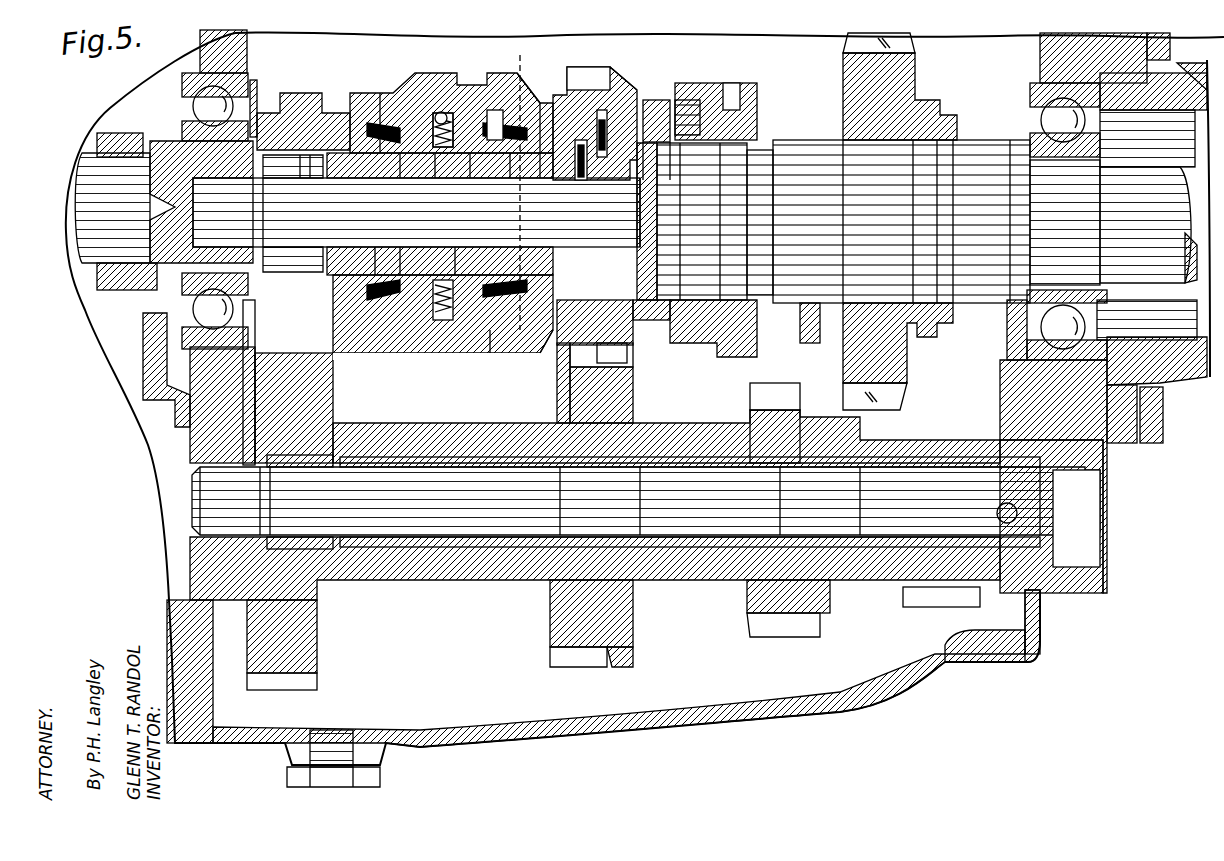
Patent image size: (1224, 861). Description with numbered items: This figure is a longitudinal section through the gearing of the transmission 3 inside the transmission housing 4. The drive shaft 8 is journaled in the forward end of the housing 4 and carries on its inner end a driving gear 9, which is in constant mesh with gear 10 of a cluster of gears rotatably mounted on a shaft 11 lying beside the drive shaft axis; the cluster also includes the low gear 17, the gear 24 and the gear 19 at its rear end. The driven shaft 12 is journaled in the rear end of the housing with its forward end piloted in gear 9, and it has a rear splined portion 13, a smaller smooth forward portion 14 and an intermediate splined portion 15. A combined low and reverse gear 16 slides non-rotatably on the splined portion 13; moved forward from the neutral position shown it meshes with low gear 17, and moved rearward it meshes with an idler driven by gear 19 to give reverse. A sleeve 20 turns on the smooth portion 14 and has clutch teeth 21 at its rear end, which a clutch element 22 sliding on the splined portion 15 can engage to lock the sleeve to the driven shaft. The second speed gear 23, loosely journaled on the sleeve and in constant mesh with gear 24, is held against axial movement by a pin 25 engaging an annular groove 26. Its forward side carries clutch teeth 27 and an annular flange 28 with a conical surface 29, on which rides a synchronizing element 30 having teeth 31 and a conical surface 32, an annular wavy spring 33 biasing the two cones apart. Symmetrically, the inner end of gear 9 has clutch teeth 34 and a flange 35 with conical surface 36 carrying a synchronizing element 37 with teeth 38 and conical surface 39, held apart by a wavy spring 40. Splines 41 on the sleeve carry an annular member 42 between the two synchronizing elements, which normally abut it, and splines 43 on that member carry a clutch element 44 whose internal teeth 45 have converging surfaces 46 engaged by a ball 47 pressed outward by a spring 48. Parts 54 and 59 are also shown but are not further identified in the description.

The transmission casing 3 is at (702, 673).
The transmission housing 4 is at (826, 716).
The drive shaft 8 is at (78, 262).
The driving gear 9 is at (292, 108).
The gear 10 is at (312, 628).
The shaft 11 is at (438, 578).
The driven shaft 12 is at (1158, 268).
The rear splined portion 13 is at (814, 150).
The smooth portion 14 is at (285, 210).
The intermediate splined portion 15 is at (750, 312).
The combined low and reverse gear 16 is at (900, 78).
The low gear 17 is at (752, 607).
The gear 19 is at (958, 593).
The sleeve 20 is at (512, 130).
The clutch teeth 21 is at (662, 100).
The clutch element 22 is at (715, 85).
The second speed gear 23 is at (600, 76).
The gear 24 is at (548, 630).
The pin 25 is at (585, 183).
The annular groove 26 is at (580, 250).
The clutch teeth 27 is at (566, 92).
The annular flange 28 is at (514, 180).
The conical surface 29 is at (538, 180).
The synchronizing element 30 is at (472, 180).
The teeth 31 is at (523, 183).
The conical surface 32 is at (495, 110).
The annular wavy spring 33 is at (515, 108).
The clutch teeth 34 is at (345, 100).
The annular flange 35 is at (384, 182).
The conical surface 36 is at (358, 183).
The synchronizing element 37 is at (410, 183).
The teeth 38 is at (383, 95).
The conical surface 39 is at (400, 250).
The annular wavy spring 40 is at (333, 183).
The splines 41 is at (376, 248).
The annular member 42 is at (410, 100).
The splines 43 is at (387, 340).
The clutch element 44 is at (493, 355).
The internal teeth 45 is at (500, 352).
The converging surfaces 46 is at (455, 118).
The ball 47 is at (440, 180).
The spring 48 is at (457, 248).
The gear 54 is at (925, 325).
The support 59 is at (745, 345).